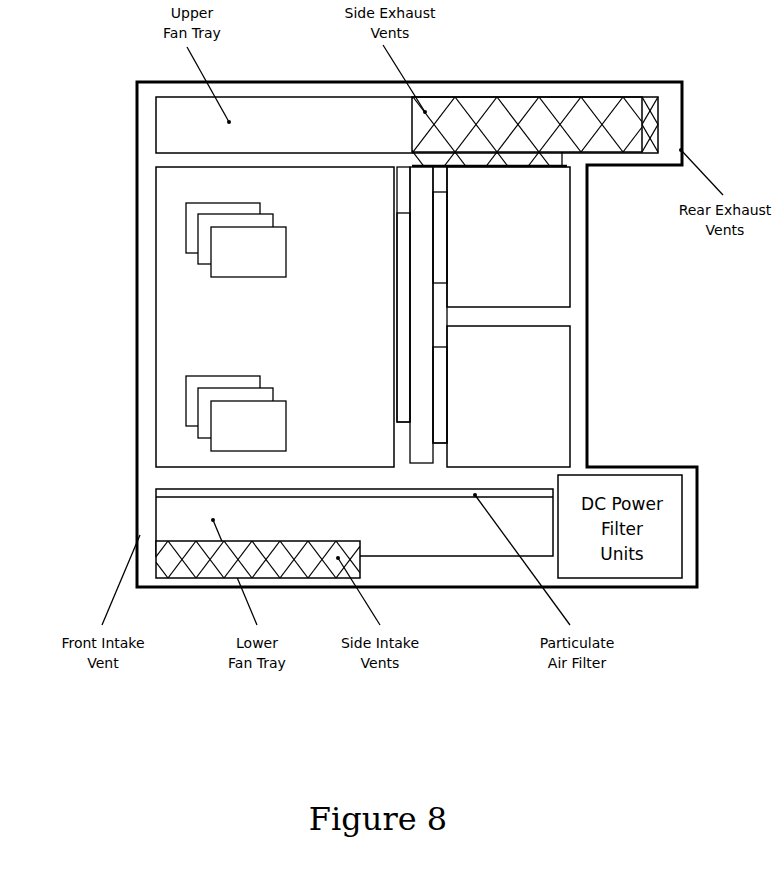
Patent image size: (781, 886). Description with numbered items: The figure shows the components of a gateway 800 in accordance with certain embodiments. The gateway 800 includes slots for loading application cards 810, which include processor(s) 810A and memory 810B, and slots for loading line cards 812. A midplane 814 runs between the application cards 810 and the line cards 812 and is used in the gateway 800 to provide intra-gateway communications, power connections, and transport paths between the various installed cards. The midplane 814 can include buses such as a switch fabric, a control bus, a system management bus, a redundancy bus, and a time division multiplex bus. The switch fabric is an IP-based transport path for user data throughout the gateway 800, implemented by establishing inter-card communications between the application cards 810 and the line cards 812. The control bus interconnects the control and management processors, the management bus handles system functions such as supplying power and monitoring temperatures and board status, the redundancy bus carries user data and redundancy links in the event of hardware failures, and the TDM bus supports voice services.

The gateway 800 is at (407, 752).
The application cards 810 is at (156, 352).
The processor(s) 810A is at (287, 252).
The memory 810B is at (287, 425).
The line cards 812 is at (568, 237).
The midplane 814 is at (424, 462).